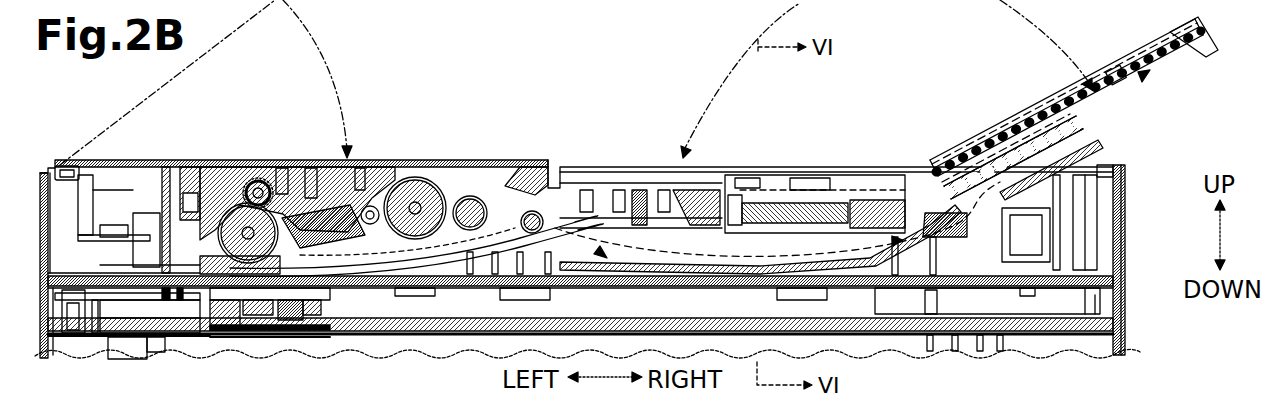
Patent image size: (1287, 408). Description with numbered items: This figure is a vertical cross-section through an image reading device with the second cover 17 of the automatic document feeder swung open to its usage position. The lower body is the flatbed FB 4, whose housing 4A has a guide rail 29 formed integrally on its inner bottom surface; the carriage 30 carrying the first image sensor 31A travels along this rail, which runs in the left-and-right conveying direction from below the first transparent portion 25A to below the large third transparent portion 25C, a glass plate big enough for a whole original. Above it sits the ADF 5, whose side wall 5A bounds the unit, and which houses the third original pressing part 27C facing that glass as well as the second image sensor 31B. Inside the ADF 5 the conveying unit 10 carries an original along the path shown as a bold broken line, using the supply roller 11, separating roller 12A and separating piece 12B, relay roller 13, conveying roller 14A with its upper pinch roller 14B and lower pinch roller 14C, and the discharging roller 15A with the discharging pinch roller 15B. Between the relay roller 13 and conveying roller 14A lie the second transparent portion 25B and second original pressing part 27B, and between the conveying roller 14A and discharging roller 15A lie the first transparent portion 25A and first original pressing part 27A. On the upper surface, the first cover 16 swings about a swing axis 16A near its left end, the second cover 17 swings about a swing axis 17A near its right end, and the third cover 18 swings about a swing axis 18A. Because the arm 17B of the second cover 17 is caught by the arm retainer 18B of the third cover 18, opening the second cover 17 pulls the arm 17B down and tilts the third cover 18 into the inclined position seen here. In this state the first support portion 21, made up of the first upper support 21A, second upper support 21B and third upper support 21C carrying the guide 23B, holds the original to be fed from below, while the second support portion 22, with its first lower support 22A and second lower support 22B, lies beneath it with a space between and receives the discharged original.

The FB 4 is at (1125, 272).
The housing 4A is at (1125, 310).
The ADF 5 is at (1115, 164).
The side wall of upper cover 5A is at (1125, 200).
The conveying unit 10 is at (417, 150).
The supply roller 11 is at (478, 196).
The separating roller 12A is at (428, 178).
The separating piece 12B is at (412, 296).
The relay roller 13 is at (373, 205).
The conveying roller 14A is at (222, 212).
The upper pinch roller 14B is at (253, 180).
The lower pinch roller 14C is at (172, 188).
The discharging roller 15A is at (520, 232).
The discharging pinch roller 15B is at (542, 216).
The first cover 16 is at (330, 168).
The swing axis 16A is at (60, 165).
The second cover 17 is at (1150, 95).
The swing axis 17A is at (895, 237).
The arm 17B is at (852, 262).
The third cover 18 is at (1100, 134).
The swing axis 18A is at (1098, 186).
The arm retainer 18B is at (1000, 320).
The first support portion 21 is at (830, 175).
The first upper support 21A is at (1064, 93).
The second upper support 21B is at (805, 178).
The third upper support 21C is at (735, 196).
The second support portion 22 is at (870, 200).
The first lower support 22A is at (1003, 138).
The second lower support 22B is at (775, 203).
The guide 23B is at (700, 190).
The first transparent portion 25A is at (305, 330).
The second transparent portion 25B is at (284, 168).
The third transparent portion 25C is at (931, 300).
The first original pressing part 27A is at (345, 322).
The second original pressing part 27B is at (311, 168).
The third original pressing part 27C is at (890, 300).
The guide rail 29 is at (468, 334).
The carriage 30 is at (220, 332).
The first image sensor 31A is at (255, 332).
The second image sensor 31B is at (360, 168).